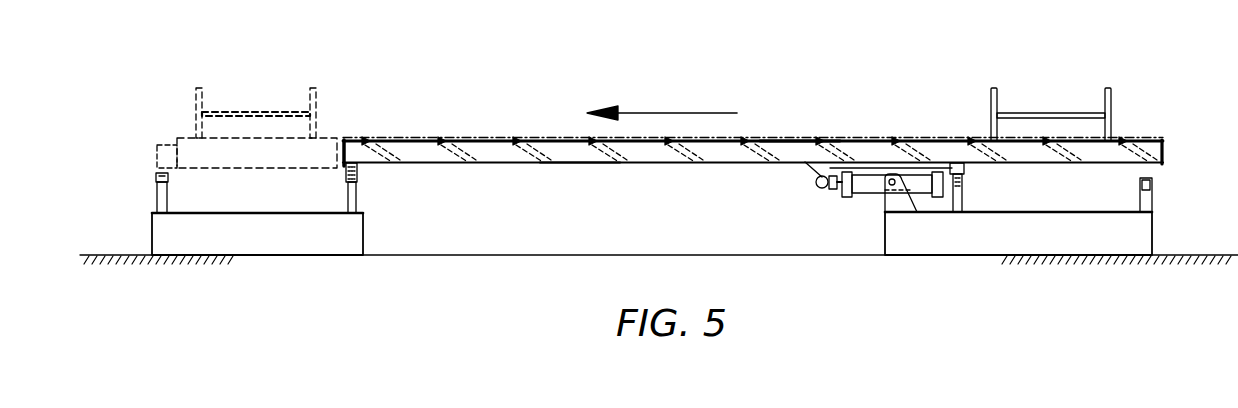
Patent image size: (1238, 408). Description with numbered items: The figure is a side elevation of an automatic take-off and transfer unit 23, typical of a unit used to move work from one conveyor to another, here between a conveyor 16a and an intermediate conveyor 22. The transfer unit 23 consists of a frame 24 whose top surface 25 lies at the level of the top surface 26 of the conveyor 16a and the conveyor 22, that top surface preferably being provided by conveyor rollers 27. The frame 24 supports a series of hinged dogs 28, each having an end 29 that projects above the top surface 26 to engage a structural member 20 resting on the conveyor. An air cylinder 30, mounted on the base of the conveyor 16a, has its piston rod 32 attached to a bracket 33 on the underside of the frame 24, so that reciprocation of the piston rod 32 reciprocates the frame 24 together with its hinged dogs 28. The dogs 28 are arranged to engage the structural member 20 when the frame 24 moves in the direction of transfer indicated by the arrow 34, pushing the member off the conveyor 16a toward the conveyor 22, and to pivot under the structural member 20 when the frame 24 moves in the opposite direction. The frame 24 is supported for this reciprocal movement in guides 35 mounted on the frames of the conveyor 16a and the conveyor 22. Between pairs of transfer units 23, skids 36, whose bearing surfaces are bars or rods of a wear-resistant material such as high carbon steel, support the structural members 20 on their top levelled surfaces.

The conveyor 16a is at (1153, 190).
The structural member 20 is at (1108, 90).
The intermediate conveyor 22 is at (270, 170).
The automatic take-off and transfer unit 23 is at (652, 163).
The frame 24 is at (572, 163).
The top surface 25 is at (720, 138).
The top surface 26 is at (575, 140).
The conveyor rollers 27 is at (180, 138).
The hinged dogs 28 is at (384, 154).
The end 29 is at (364, 140).
The air cylinder 30 is at (865, 196).
The piston rod 32 is at (820, 188).
The bracket 33 is at (810, 172).
The arrow 34 is at (662, 113).
The guides 35 is at (360, 174).
The skids 36 is at (774, 140).